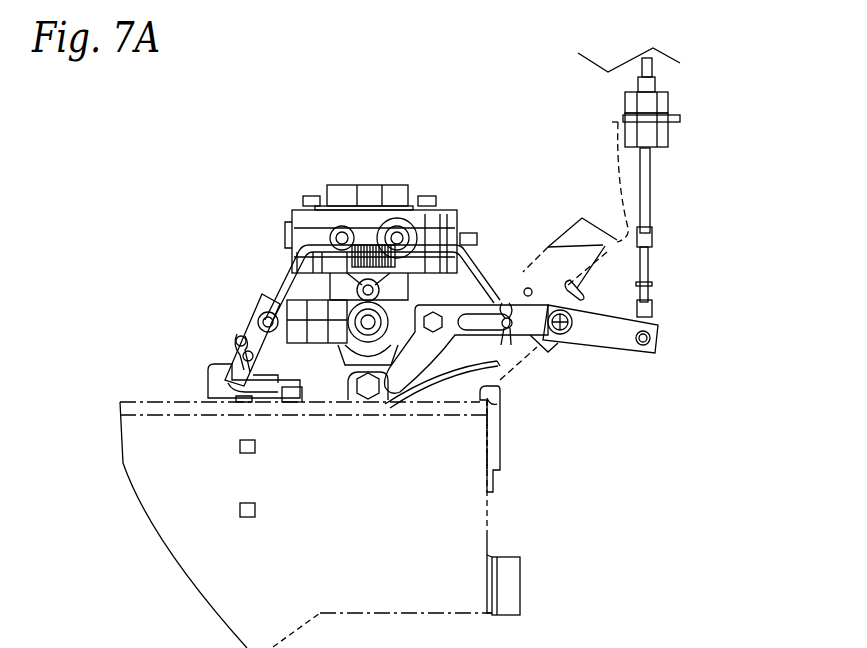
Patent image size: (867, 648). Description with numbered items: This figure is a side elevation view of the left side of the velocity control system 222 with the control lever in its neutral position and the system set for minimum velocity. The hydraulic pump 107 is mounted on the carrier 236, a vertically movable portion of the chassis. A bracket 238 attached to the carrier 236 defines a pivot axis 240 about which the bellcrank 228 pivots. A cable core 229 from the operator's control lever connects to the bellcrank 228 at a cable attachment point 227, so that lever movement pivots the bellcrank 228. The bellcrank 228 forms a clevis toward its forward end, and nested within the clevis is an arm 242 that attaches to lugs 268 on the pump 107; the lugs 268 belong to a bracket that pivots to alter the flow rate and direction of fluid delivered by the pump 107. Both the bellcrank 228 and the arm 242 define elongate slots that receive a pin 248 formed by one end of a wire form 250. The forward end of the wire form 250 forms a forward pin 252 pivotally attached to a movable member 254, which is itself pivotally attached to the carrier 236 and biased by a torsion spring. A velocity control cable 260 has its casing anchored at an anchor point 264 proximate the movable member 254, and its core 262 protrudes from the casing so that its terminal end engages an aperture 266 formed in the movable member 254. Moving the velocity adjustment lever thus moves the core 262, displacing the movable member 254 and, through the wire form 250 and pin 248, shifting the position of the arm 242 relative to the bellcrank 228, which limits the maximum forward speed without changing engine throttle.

The velocity control system 222 is at (436, 271).
The hydraulic pump 107 is at (368, 185).
The bracket 238 is at (562, 238).
The pin 248 is at (505, 300).
The wire form 250 is at (290, 263).
The forward pin 252 is at (263, 305).
The movable member 254 is at (238, 336).
The aperture 266 is at (224, 378).
The carrier 236 is at (135, 402).
The cable core 229 is at (650, 263).
The cable attachment point 227 is at (648, 345).
The bellcrank 228 is at (617, 353).
The pivot axis 240 is at (563, 333).
The arm 242 is at (480, 398).
The velocity control cable 260 is at (448, 400).
The lugs 268 is at (404, 385).
The anchor point 264 is at (290, 403).
The core 262 is at (250, 385).